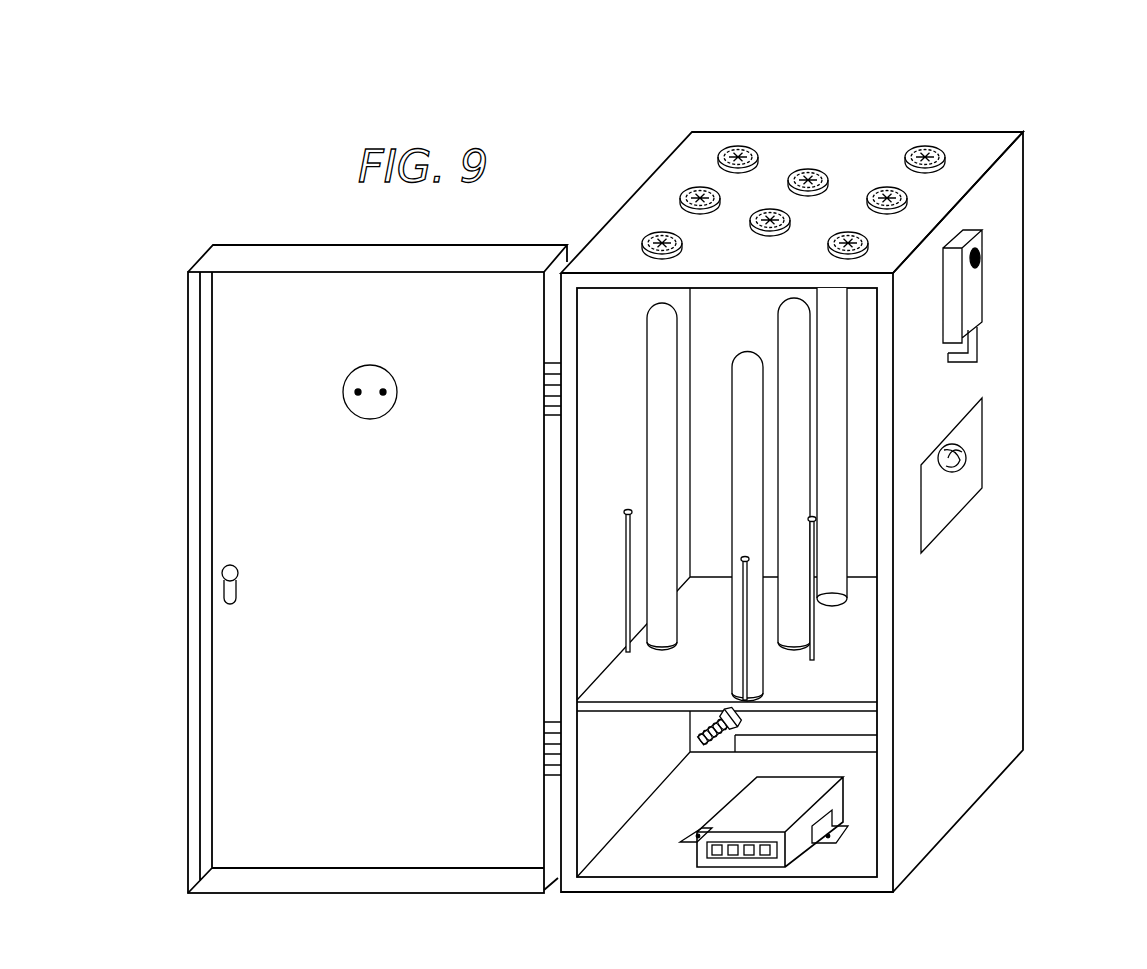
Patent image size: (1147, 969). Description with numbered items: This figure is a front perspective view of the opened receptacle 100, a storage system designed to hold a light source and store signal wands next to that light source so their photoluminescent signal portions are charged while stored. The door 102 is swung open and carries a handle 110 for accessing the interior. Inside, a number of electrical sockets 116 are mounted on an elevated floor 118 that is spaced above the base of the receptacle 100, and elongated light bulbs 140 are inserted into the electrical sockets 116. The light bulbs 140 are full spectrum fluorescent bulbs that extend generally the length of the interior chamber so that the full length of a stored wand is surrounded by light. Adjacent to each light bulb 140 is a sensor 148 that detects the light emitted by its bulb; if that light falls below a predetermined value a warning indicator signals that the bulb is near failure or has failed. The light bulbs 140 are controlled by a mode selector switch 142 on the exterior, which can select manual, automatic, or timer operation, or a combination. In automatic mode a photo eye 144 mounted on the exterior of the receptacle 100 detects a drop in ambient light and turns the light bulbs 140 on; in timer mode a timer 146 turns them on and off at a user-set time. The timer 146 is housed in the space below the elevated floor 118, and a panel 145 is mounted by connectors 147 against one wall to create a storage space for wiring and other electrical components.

The receptacle 100 is at (1028, 102).
The door 102 is at (408, 602).
The handle 110 is at (230, 562).
The electrical sockets 116 is at (737, 688).
The elevated floor 118 is at (652, 690).
The light bulbs 140 is at (658, 403).
The mode selector switch 142 is at (933, 468).
The photo eye 144 is at (982, 252).
The panel 145 is at (827, 720).
The timer 146 is at (755, 818).
The connectors 147 is at (722, 742).
The sensor 148 is at (625, 582).